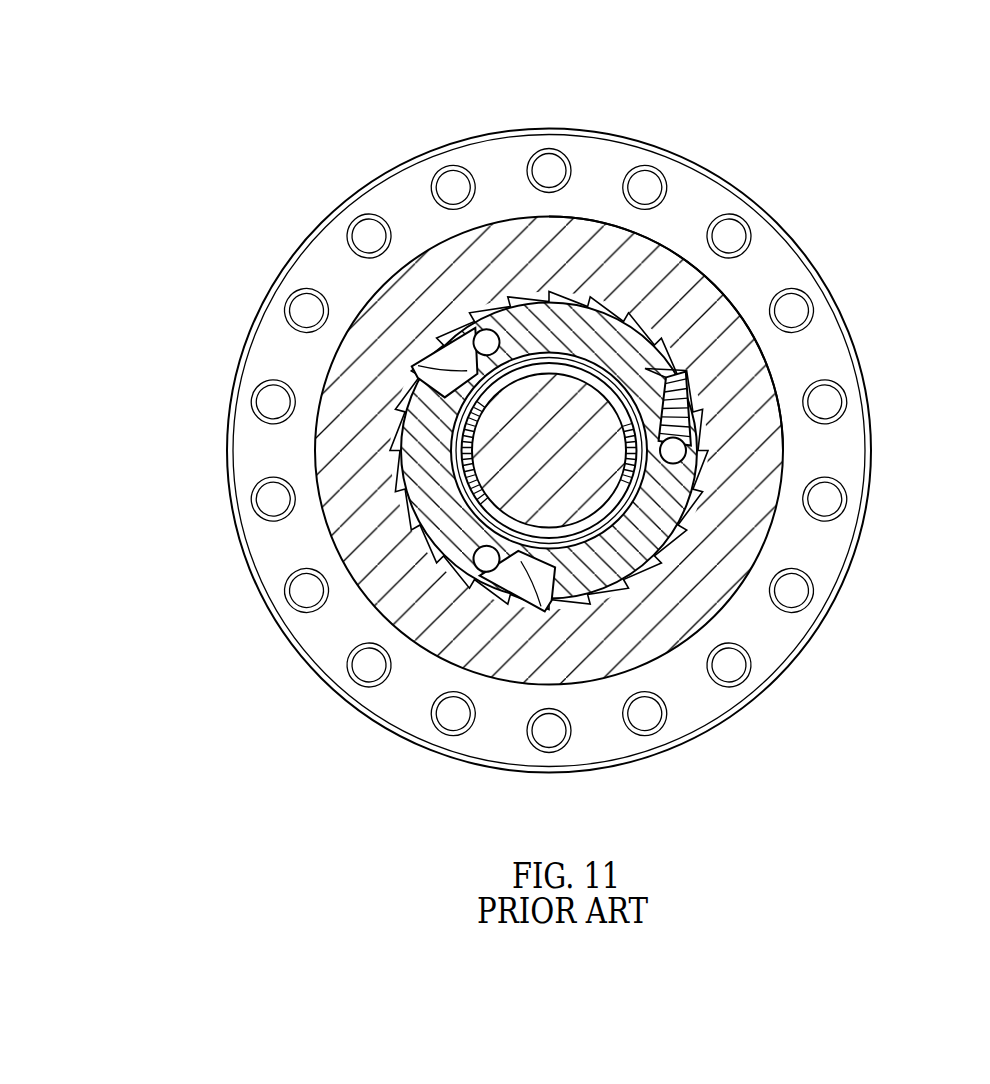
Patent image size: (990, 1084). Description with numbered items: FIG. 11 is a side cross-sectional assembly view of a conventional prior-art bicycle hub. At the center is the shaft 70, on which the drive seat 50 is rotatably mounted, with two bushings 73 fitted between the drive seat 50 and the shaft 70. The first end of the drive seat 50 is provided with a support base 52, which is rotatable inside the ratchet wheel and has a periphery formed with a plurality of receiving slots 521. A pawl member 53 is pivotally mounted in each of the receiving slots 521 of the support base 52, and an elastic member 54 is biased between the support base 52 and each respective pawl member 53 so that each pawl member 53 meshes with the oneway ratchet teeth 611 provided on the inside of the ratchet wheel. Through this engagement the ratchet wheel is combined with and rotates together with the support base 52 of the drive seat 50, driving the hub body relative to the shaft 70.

The drive seat 50 is at (690, 207).
The support base 52 is at (656, 496).
The receiving slots 521 is at (628, 550).
The pawl members 53 is at (632, 451).
The elastic members 54 is at (669, 346).
The oneway ratchet teeth 611 is at (769, 347).
The shaft 70 is at (357, 482).
The bushings 73 is at (380, 451).